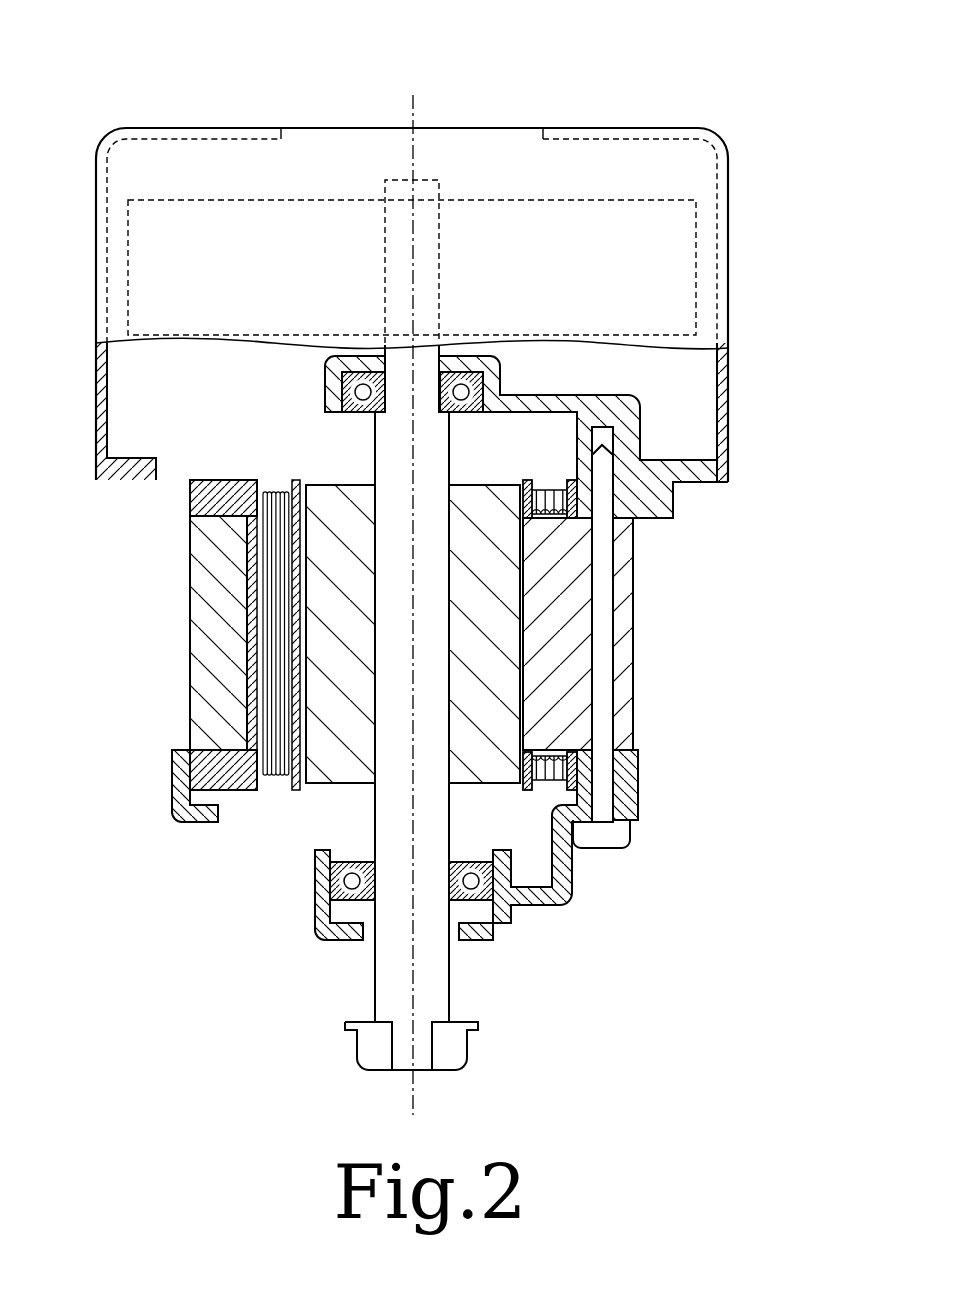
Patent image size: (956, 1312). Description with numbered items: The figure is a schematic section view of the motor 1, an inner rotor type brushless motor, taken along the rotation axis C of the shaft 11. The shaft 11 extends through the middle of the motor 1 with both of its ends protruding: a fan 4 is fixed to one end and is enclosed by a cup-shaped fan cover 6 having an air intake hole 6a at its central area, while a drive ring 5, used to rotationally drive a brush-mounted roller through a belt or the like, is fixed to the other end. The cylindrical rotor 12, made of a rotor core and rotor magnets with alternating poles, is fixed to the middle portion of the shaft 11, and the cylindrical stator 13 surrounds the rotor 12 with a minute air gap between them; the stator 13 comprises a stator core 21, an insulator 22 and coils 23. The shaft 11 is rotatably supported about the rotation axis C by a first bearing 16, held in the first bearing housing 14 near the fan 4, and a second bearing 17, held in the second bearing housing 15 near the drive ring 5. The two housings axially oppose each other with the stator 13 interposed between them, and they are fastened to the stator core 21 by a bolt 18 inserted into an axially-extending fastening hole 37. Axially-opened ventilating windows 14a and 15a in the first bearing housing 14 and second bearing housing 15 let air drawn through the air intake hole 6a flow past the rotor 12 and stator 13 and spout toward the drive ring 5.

The motor 1 is at (653, 87).
The fan 4 is at (695, 266).
The drive ring 5 is at (457, 1043).
The fan cover 6 is at (437, 265).
The air intake hole 6a is at (320, 115).
The shaft 11 is at (387, 982).
The rotor 12 is at (338, 778).
The stator 13 is at (627, 628).
The first bearing housing 14 is at (442, 457).
The ventilating window 14a is at (199, 458).
The second bearing housing 15 is at (445, 850).
The ventilating window 15a is at (296, 860).
The first bearing 16 is at (477, 413).
The second bearing 17 is at (467, 862).
The bolt 18 is at (605, 848).
The stator core 21 is at (200, 602).
The insulator 22 is at (230, 482).
The coils 23 is at (264, 778).
The fastening hole 37 is at (612, 727).
The rotation axis C is at (416, 124).